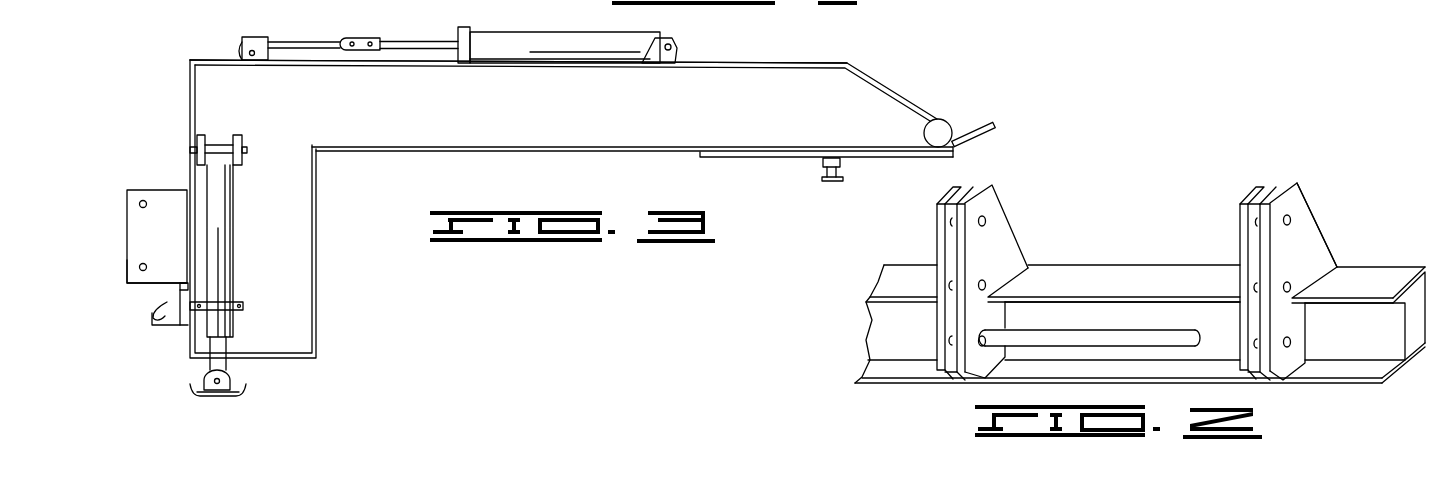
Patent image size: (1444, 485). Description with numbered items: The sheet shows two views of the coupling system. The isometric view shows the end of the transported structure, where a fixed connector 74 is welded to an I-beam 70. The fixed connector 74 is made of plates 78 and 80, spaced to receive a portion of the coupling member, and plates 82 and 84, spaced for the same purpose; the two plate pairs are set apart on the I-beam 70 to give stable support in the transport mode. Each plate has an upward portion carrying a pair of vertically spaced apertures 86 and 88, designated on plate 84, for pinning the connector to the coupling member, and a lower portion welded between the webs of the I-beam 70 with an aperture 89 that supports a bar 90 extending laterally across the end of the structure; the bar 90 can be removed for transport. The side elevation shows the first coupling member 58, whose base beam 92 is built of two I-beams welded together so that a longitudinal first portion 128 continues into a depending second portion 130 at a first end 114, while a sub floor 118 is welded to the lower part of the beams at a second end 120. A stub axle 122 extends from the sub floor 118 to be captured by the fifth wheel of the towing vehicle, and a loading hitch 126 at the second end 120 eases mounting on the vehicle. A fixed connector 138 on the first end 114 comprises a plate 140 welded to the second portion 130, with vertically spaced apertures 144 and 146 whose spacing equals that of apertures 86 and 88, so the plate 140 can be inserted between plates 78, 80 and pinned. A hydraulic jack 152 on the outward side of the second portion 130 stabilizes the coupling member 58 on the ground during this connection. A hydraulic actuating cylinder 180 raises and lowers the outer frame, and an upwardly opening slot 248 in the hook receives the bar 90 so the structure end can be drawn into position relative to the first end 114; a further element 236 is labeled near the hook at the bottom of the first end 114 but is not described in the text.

In FIG. 3, the first coupling member 58 is at (900, 55).
In FIG. 2, the I-beam 70 is at (1372, 277).
In FIG. 2, the fixed connector 74 is at (1300, 231).
In FIG. 2, the plate 78 is at (940, 235).
In FIG. 2, the plate 80 is at (1000, 227).
In FIG. 2, the plate 82 is at (1240, 223).
In FIG. 2, the plate 84 is at (1295, 200).
In FIG. 2, the aperture 86 is at (1291, 218).
In FIG. 2, the aperture 88 is at (1290, 286).
In FIG. 2, the aperture 89 is at (1292, 342).
In FIG. 2, the bar 90 is at (1062, 338).
In FIG. 3, the base beam 92 is at (730, 75).
In FIG. 3, the first end 114 is at (187, 80).
In FIG. 3, the sub floor 118 is at (748, 158).
In FIG. 3, the second end 120 is at (957, 153).
In FIG. 3, the stub axle 122 is at (843, 170).
In FIG. 3, the loading hitch 126 is at (978, 123).
In FIG. 3, the first portion 128 is at (758, 120).
In FIG. 3, the second portion 130 is at (287, 233).
In FIG. 3, the fixed connector 138 is at (125, 210).
In FIG. 3, the plate 140 is at (163, 267).
In FIG. 3, the aperture 144 is at (143, 199).
In FIG. 3, the aperture 146 is at (141, 265).
In FIG. 3, the hydraulic jack 152 is at (218, 281).
In FIG. 3, the hydraulic actuating cylinder 180 is at (550, 42).
In FIG. 3, the pin 236 is at (177, 318).
In FIG. 3, the slot 248 is at (150, 316).